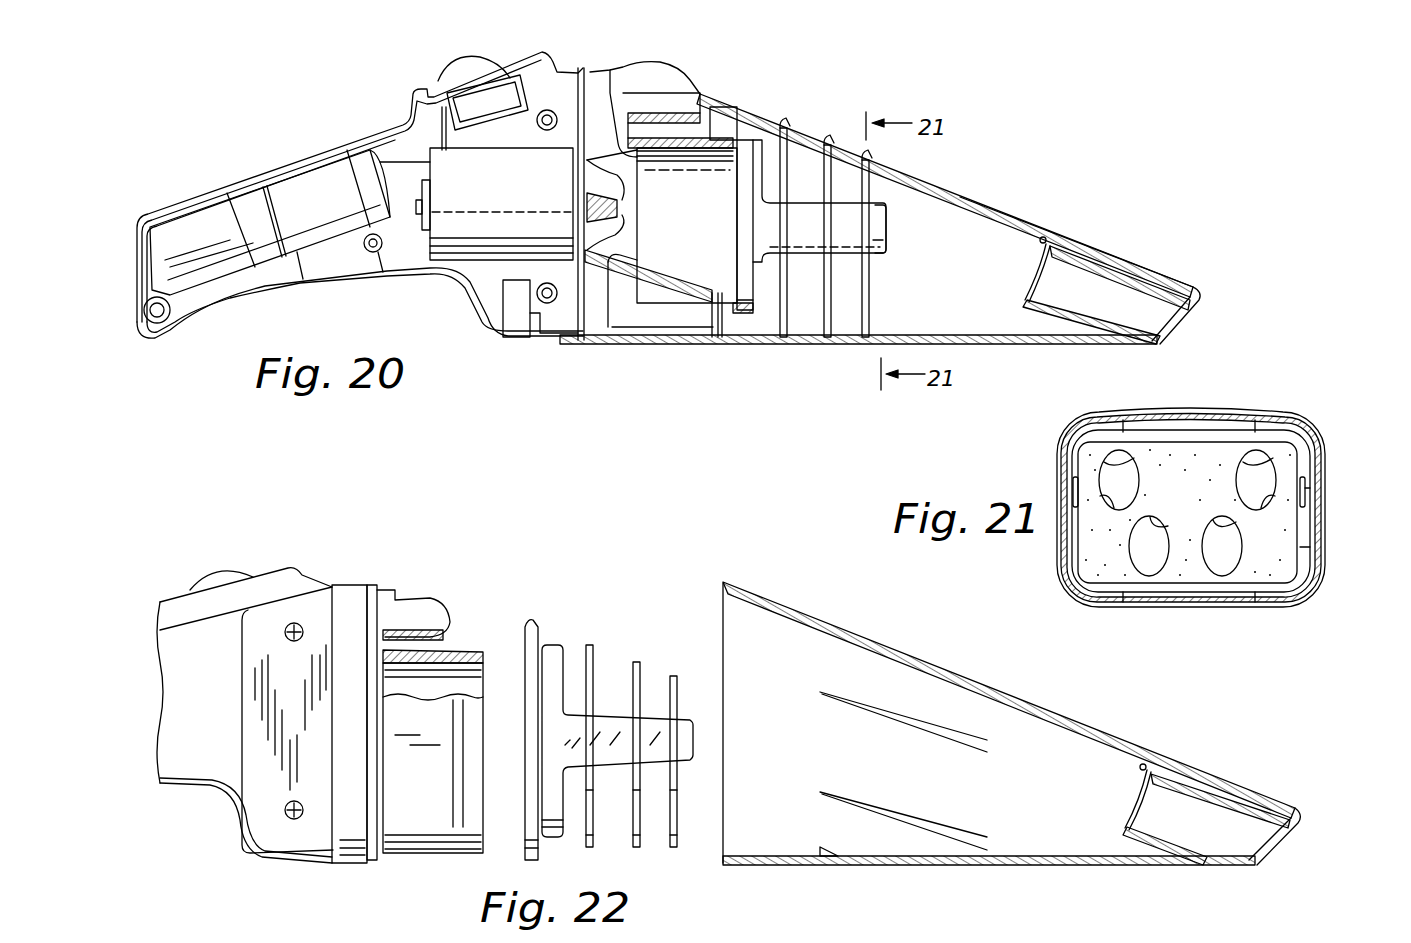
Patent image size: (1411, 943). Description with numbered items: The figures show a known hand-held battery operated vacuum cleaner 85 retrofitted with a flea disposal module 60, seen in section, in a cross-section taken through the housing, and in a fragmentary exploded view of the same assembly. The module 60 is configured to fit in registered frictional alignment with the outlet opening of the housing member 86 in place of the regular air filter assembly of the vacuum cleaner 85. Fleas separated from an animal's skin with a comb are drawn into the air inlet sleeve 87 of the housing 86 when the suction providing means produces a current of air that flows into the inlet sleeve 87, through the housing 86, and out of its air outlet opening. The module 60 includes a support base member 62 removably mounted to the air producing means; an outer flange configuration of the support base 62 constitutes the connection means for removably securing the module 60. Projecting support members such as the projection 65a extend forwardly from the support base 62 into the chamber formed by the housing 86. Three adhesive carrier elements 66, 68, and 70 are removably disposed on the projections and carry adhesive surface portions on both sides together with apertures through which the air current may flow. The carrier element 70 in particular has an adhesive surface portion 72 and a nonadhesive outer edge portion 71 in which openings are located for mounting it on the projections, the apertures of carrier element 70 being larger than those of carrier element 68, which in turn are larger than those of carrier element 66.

In FIG. 20, the flea disposal module 60 is at (722, 218).
In FIG. 22, the flea disposal module 60 is at (514, 618).
In FIG. 20, the support base member 62 is at (748, 148).
In FIG. 22, the support base member 62 is at (541, 625).
In FIG. 20, the projecting support member 65a is at (882, 242).
In FIG. 20, the adhesive carrier element 66 is at (783, 158).
In FIG. 22, the adhesive carrier element 66 is at (590, 648).
In FIG. 20, the adhesive carrier element 68 is at (828, 172).
In FIG. 22, the adhesive carrier element 68 is at (636, 662).
In FIG. 20, the adhesive carrier element 70 is at (870, 188).
In FIG. 21, the adhesive carrier element 70 is at (1210, 430).
In FIG. 22, the adhesive carrier element 70 is at (677, 676).
In FIG. 21, the nonadhesive outer edge portion 71 is at (1073, 557).
In FIG. 21, the adhesive surface portion 72 is at (1204, 502).
In FIG. 20, the vacuum cleaner 85 is at (292, 132).
In FIG. 21, the vacuum cleaner 85 is at (1274, 402).
In FIG. 22, the vacuum cleaner 85 is at (326, 564).
In FIG. 20, the housing member 86 is at (1030, 222).
In FIG. 21, the housing member 86 is at (1322, 502).
In FIG. 22, the housing member 86 is at (1080, 705).
In FIG. 20, the air inlet sleeve 87 is at (1131, 268).
In FIG. 22, the air inlet sleeve 87 is at (1232, 806).